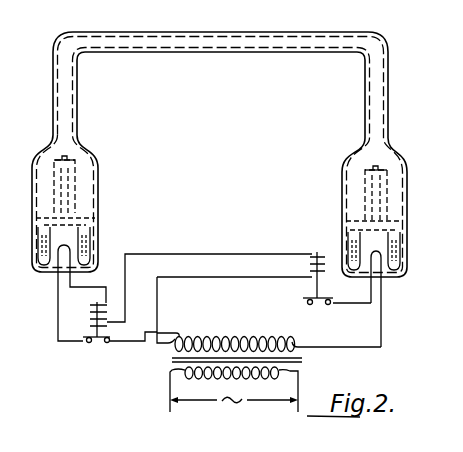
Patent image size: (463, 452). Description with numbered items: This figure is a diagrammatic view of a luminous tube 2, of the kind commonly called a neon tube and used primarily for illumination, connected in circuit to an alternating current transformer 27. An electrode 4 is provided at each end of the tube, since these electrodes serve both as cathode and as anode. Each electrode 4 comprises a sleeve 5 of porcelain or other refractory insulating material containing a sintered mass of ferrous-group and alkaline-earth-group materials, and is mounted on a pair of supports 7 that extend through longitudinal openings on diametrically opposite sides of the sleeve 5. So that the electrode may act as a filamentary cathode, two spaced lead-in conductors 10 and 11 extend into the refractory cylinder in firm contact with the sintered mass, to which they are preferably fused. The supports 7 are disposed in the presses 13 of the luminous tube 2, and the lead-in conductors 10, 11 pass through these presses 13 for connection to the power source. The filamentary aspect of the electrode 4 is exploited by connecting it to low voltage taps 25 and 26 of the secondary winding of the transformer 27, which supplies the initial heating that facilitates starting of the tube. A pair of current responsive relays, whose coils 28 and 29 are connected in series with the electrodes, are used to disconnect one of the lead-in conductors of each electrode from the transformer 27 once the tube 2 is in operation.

The luminous tube 2 is at (208, 73).
The electrode 4 is at (80, 176).
The sleeve 5 is at (66, 162).
The supports 7 is at (36, 218).
The lead-in conductor 10 is at (42, 226).
The lead-in conductor 11 is at (86, 225).
The presses 13 is at (80, 242).
The low voltage tap 25 is at (290, 340).
The low voltage tap 26 is at (189, 338).
The transformer 27 is at (149, 368).
The relay coil 28 is at (310, 271).
The relay coil 29 is at (82, 322).